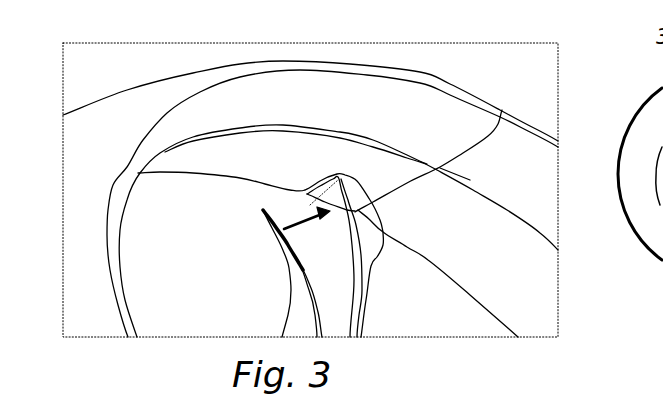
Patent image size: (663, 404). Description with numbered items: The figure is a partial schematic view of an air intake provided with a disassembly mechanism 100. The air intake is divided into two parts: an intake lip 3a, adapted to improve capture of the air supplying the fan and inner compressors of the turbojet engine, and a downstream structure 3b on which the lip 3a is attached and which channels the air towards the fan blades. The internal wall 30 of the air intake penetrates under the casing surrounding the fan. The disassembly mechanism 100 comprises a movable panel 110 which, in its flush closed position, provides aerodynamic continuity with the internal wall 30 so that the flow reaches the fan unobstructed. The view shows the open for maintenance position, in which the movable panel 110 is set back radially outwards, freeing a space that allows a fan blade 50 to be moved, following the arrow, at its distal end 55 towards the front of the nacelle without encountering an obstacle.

The intake lip 3a is at (264, 98).
The downstream structure 3b is at (158, 92).
The internal wall 30 is at (532, 288).
The fan blade 50 is at (347, 307).
The distal end 55 is at (288, 247).
The disassembly mechanism 100 is at (341, 164).
The movable panel 110 is at (316, 213).